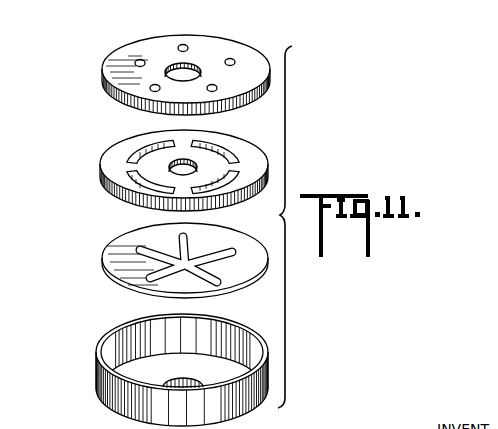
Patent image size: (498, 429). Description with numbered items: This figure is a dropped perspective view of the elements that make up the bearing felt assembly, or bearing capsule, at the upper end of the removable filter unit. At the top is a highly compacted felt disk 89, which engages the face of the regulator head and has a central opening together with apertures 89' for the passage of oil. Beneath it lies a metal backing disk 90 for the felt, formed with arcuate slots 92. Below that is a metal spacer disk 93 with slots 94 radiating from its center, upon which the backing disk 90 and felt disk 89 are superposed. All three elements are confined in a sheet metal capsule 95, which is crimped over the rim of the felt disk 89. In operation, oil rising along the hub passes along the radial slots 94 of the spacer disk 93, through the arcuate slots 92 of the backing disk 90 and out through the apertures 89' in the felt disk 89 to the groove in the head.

The highly compacted felt disk 89 is at (162, 75).
The apertures 89' is at (185, 50).
The metal backing disk 90 is at (103, 180).
The arcuate slots 92 is at (138, 172).
The metal spacer disk 93 is at (102, 267).
The slots 94 is at (140, 250).
The sheet metal capsule 95 is at (97, 380).